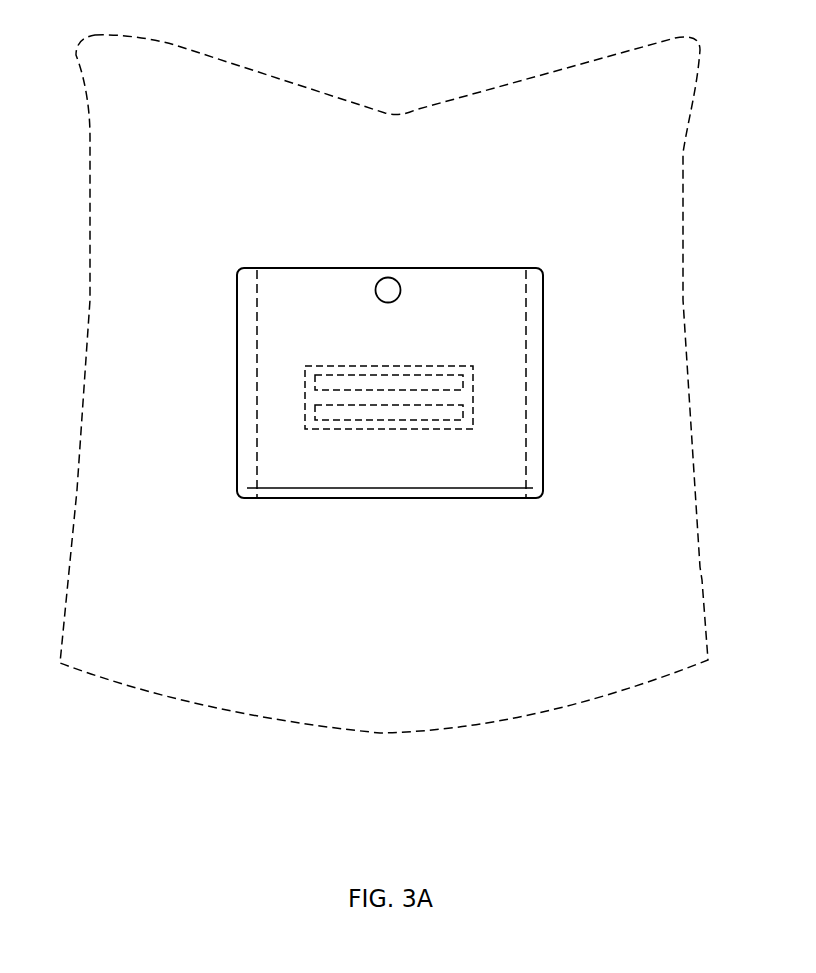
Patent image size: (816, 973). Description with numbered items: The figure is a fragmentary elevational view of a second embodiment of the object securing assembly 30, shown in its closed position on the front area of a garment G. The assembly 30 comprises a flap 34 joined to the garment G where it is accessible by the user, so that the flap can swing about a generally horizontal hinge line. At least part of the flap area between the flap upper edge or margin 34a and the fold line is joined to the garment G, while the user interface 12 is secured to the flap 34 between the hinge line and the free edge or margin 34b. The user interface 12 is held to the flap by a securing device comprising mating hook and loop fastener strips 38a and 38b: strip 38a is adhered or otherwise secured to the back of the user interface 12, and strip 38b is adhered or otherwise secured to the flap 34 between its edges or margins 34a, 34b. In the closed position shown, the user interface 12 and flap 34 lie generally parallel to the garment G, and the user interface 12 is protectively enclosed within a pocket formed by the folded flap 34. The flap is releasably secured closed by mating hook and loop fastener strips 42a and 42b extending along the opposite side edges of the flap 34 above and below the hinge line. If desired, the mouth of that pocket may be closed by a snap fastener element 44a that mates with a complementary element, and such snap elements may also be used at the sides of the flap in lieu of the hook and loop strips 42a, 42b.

The garment G is at (683, 227).
The object securing assembly 30 is at (228, 491).
The flap 34 is at (490, 470).
The flap upper edge or margin 34a is at (357, 219).
The free edge or margin 34b is at (322, 268).
The snap fastener element 44a is at (400, 290).
The hook and loop fastener strip 42a is at (381, 383).
The hook and loop fastener strip 42b is at (243, 413).
The user interface 12 is at (440, 363).
The hook and loop fastener strip 38a is at (486, 411).
The hook and loop fastener strip 38b is at (462, 382).